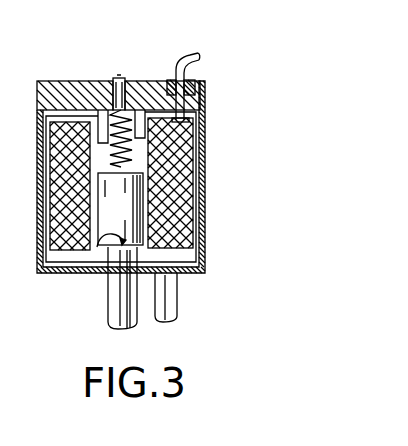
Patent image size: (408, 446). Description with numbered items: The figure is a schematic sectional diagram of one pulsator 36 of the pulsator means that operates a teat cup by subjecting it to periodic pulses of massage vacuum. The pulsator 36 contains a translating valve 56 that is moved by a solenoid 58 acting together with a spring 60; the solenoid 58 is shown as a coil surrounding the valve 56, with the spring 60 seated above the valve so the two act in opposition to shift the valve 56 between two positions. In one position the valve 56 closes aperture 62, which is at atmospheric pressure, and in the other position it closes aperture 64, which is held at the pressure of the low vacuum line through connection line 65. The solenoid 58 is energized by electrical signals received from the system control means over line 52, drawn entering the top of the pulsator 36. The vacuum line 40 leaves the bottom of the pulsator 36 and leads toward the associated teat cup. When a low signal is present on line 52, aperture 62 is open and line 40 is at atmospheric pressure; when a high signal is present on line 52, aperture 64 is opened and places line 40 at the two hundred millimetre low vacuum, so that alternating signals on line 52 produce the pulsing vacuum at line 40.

The pulsator 36 is at (207, 219).
The vacuum line 40 is at (180, 293).
The line 52 is at (200, 58).
The translating valve 56 is at (126, 217).
The solenoid 58 is at (175, 180).
The spring 60 is at (157, 153).
The aperture 62 is at (119, 78).
The aperture 64 is at (97, 247).
The connection line 65 is at (108, 313).